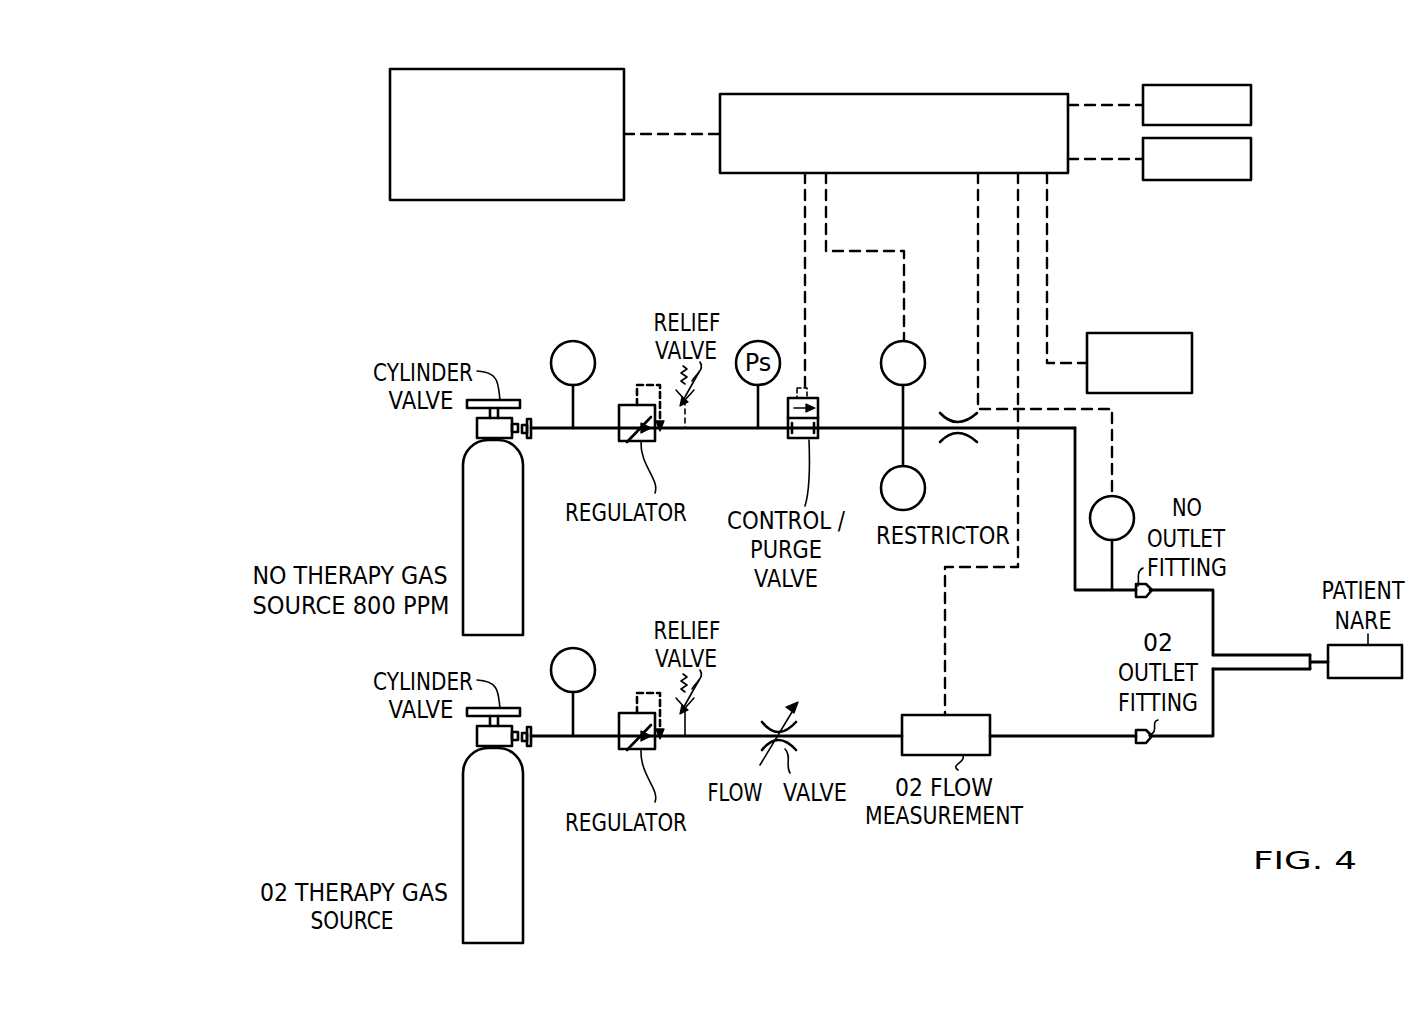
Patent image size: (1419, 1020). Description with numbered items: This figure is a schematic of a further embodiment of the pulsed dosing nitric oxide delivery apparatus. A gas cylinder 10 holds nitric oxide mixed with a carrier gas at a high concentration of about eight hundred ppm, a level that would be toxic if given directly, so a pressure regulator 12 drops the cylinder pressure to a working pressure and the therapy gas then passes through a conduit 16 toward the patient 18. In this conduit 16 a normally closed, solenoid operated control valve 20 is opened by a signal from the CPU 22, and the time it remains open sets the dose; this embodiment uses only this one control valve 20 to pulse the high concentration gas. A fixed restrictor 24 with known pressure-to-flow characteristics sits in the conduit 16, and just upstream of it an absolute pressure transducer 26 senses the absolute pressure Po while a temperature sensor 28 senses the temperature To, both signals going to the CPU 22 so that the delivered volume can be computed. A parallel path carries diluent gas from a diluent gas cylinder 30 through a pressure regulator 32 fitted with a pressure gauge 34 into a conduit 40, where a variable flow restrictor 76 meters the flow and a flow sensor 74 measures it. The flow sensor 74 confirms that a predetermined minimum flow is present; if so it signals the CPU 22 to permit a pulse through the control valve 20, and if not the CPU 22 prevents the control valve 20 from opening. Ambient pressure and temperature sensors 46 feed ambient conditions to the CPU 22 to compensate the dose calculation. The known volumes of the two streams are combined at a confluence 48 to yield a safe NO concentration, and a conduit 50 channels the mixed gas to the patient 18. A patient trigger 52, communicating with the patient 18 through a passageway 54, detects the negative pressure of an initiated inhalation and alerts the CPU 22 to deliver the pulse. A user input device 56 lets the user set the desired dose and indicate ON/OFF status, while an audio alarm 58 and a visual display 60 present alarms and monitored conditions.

The gas cylinder 10 is at (463, 549).
The pressure regulator 12 is at (650, 442).
The conduit 16 is at (722, 440).
The patient 18 is at (1362, 680).
The control valve 20 is at (796, 440).
The CPU 22 is at (973, 164).
The fixed restrictor 24 is at (982, 522).
The absolute pressure transducer 26 is at (895, 340).
The temperature sensor 28 is at (896, 479).
The diluent gas cylinder 30 is at (463, 856).
The pressure regulator 32 is at (640, 751).
The pressure gauge 34 is at (590, 653).
The conduit 40 is at (735, 735).
The ambient sensors 46 is at (1139, 394).
The confluence 48 is at (1300, 656).
The conduit 50 is at (1313, 670).
The patient trigger 52 is at (1128, 503).
The passageway 54 is at (1114, 567).
The user input device 56 is at (565, 201).
The audio alarm 58 is at (1251, 105).
The visual display 60 is at (1251, 162).
The flow sensor 74 is at (965, 713).
The variable flow restrictor 76 is at (777, 722).